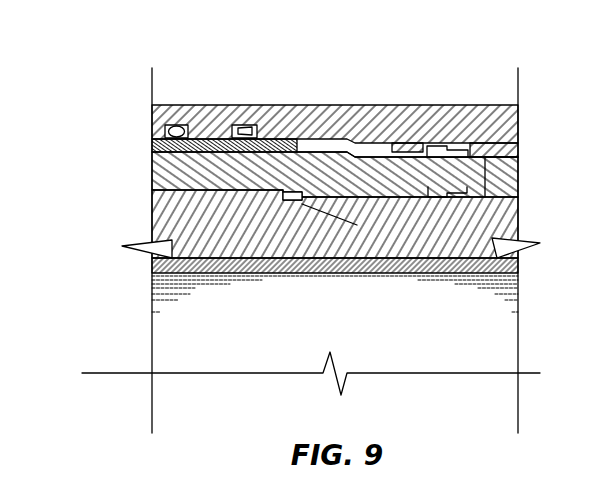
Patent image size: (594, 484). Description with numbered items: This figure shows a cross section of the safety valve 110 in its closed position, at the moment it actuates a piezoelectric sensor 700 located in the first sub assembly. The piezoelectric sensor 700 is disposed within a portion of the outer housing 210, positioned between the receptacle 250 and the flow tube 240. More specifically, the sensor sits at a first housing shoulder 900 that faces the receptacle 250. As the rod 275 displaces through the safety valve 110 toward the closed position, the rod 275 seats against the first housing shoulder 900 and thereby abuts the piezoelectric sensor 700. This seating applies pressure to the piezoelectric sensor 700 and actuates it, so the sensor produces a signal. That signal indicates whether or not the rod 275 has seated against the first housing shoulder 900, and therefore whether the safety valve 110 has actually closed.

The safety valve 110 is at (128, 58).
The receptacle 250 is at (220, 143).
The rod 275 is at (158, 172).
The outer housing 210 is at (158, 220).
The flow tube 240 is at (152, 263).
The piezoelectric sensor 700 is at (290, 189).
The first housing shoulder 900 is at (302, 201).